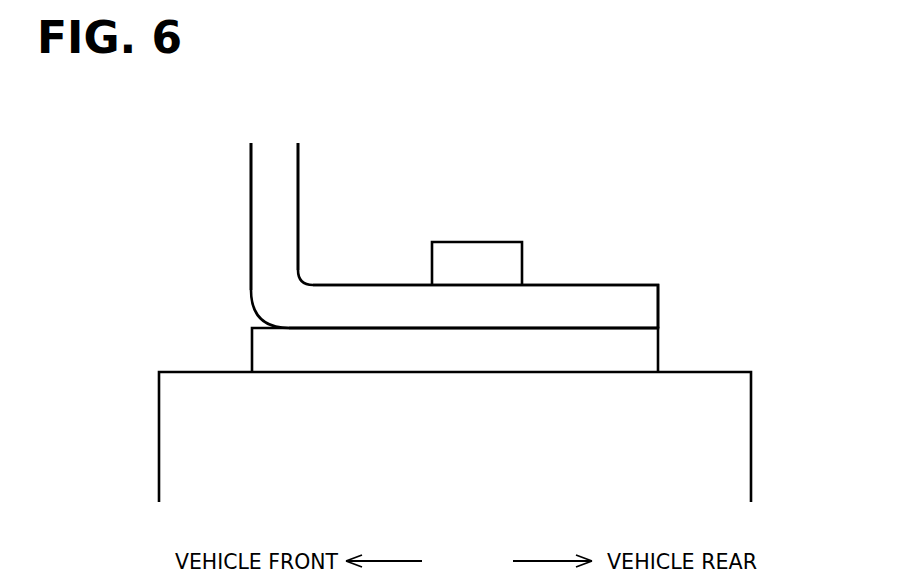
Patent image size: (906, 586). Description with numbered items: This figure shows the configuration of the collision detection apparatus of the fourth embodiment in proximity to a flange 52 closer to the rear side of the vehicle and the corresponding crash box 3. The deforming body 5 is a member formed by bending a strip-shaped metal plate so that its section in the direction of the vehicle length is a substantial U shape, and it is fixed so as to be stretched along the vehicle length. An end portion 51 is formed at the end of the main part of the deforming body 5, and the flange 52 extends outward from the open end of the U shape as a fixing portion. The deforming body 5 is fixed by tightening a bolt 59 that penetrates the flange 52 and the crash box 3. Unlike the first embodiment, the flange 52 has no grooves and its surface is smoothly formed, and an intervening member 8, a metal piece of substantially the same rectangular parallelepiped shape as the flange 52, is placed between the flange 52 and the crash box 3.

The crash box 3 is at (720, 435).
The deforming body 5 is at (306, 119).
The intervening member 8 is at (637, 352).
The end portion 51 is at (267, 190).
The flange 52 is at (361, 303).
The bolt 59 is at (478, 257).